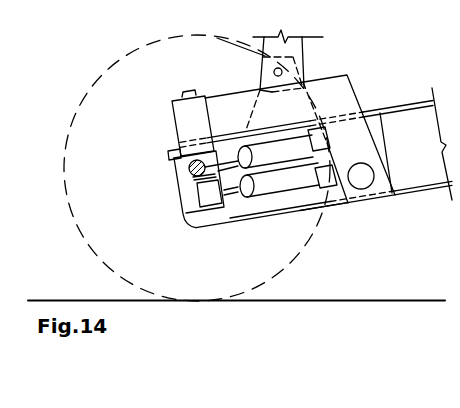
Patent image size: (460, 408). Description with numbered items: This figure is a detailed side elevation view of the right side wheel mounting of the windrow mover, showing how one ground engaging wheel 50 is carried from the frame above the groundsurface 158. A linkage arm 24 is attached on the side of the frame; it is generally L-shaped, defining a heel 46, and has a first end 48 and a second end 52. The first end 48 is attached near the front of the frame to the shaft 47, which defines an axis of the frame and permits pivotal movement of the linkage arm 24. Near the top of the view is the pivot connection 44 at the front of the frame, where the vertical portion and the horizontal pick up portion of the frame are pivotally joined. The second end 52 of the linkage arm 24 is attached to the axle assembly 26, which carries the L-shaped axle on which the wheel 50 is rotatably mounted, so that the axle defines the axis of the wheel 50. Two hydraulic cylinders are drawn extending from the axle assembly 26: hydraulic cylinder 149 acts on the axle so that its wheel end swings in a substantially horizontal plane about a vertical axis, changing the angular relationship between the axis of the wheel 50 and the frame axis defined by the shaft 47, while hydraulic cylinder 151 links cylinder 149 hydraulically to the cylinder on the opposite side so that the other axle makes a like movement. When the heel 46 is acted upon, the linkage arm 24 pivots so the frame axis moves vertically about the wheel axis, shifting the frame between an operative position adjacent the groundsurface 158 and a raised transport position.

The linkage arm 24 is at (342, 110).
The axle assembly 26 is at (168, 154).
The pivot connection 44 is at (273, 73).
The heel 46 is at (347, 75).
The shaft 47 is at (360, 177).
The first end 48 is at (358, 203).
The ground engaging wheel 50 is at (292, 237).
The second end 52 is at (185, 133).
The hydraulic cylinder 149 is at (190, 173).
The hydraulic cylinder 151 is at (200, 205).
The groundsurface 158 is at (236, 290).